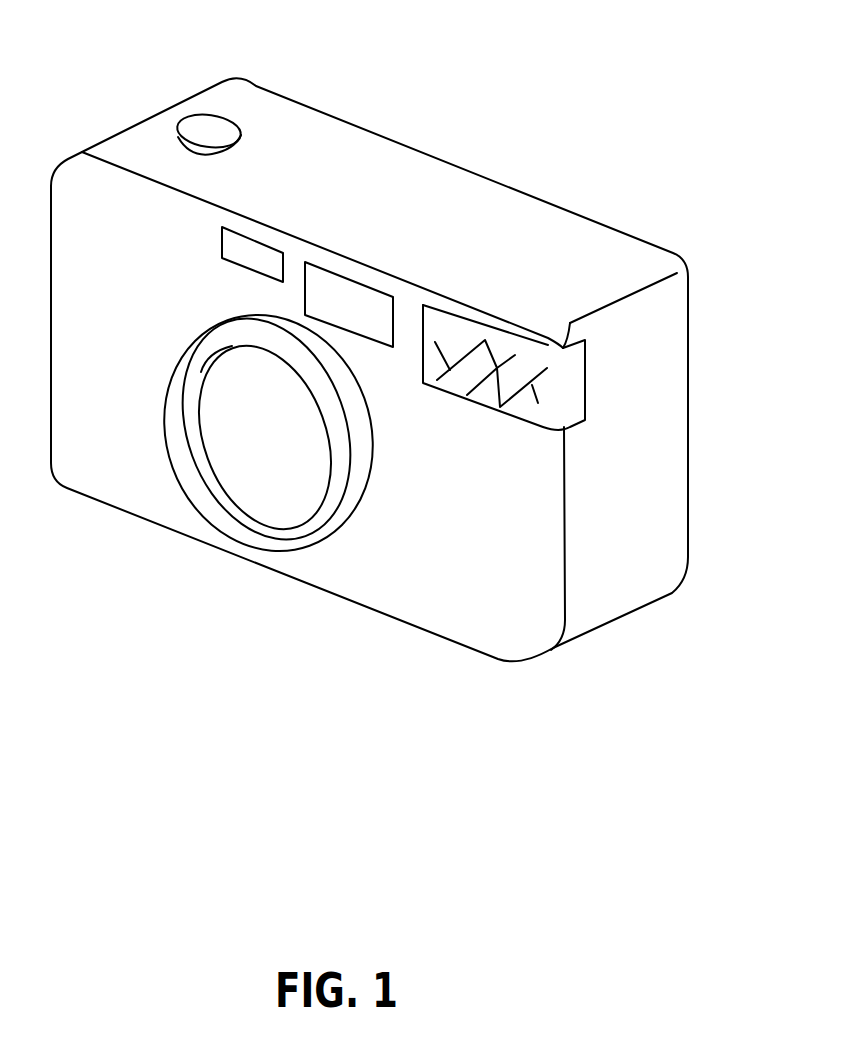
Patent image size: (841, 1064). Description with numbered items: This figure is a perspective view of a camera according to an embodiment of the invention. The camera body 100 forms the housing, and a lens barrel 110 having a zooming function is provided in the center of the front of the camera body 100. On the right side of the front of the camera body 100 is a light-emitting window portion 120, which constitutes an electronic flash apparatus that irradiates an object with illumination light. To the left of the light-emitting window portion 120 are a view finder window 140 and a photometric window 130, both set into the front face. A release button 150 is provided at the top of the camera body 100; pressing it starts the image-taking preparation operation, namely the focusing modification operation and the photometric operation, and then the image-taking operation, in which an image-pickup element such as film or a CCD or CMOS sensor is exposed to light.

The camera body 100 is at (553, 207).
The lens barrel 110 is at (232, 525).
The light-emitting window portion 120 is at (453, 325).
The photometric window 130 is at (253, 252).
The view finder window 140 is at (343, 298).
The release button 150 is at (203, 128).